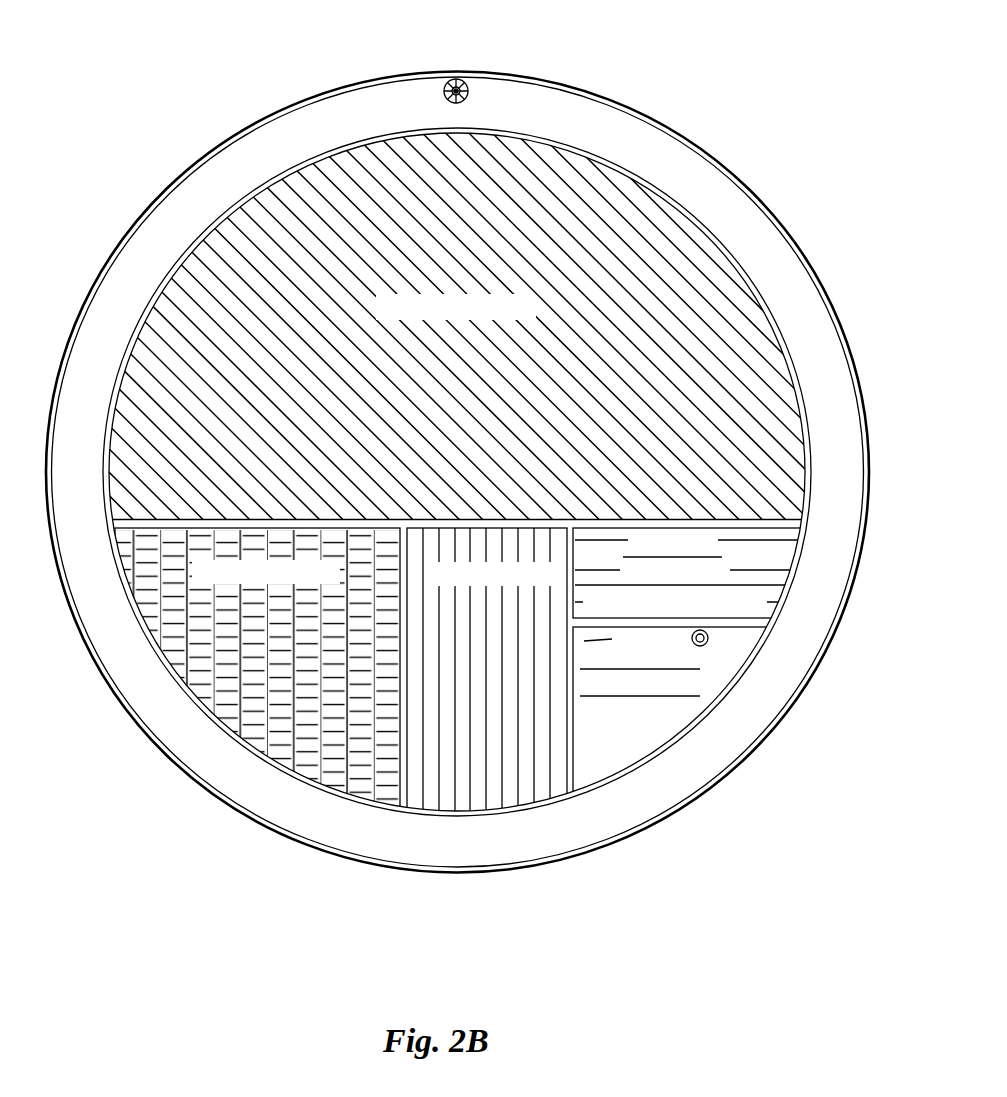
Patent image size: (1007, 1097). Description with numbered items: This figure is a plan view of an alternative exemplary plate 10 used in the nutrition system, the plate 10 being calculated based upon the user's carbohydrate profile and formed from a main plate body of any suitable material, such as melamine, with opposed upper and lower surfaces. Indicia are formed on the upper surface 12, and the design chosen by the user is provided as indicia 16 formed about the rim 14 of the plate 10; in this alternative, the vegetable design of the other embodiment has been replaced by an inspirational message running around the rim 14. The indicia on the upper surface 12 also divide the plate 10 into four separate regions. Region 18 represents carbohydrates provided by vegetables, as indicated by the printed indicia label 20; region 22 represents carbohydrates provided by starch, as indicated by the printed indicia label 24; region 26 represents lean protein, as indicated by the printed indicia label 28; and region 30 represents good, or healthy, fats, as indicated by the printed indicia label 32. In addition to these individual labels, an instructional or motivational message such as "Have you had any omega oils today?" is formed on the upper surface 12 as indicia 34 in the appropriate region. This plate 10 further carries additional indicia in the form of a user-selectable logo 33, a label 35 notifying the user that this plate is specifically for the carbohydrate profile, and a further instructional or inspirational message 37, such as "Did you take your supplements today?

The plate 10 is at (111, 62).
The upper surface 12 is at (605, 196).
The rim 14 is at (810, 684).
The indicia 16 is at (808, 270).
The region 18 is at (245, 318).
The printed indicia label 20 is at (542, 292).
The region 22 is at (250, 647).
The printed indicia label 24 is at (247, 590).
The region 26 is at (467, 733).
The printed indicia label 28 is at (448, 595).
The region 30 is at (714, 630).
The printed indicia label 32 is at (711, 528).
The user-selectable logo 33 is at (708, 670).
The indicia 34 is at (633, 610).
The label 35 is at (703, 688).
The instructional or inspirational message 37 is at (668, 720).